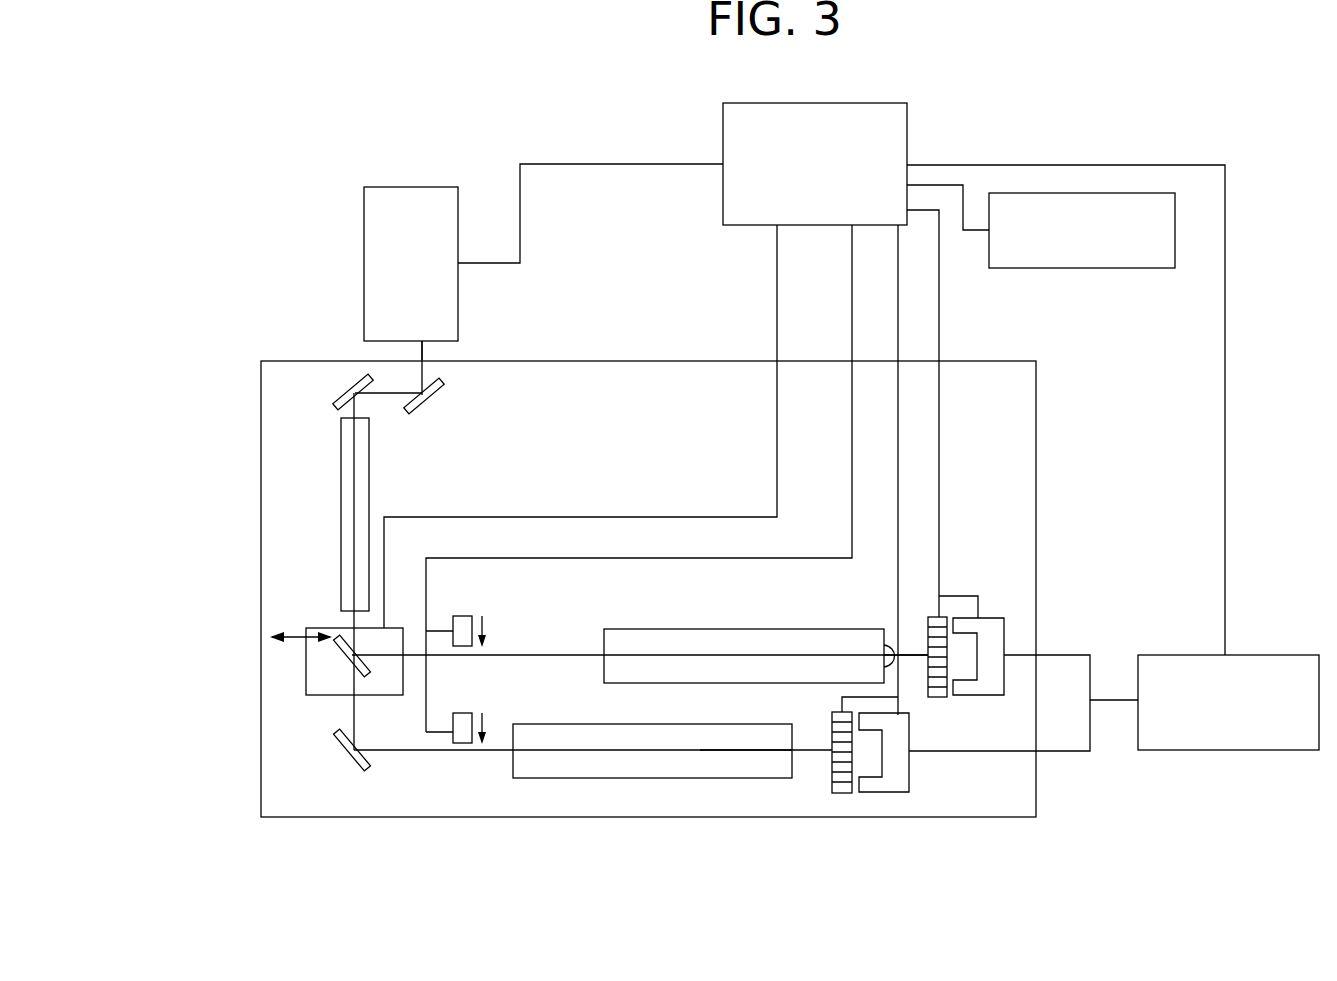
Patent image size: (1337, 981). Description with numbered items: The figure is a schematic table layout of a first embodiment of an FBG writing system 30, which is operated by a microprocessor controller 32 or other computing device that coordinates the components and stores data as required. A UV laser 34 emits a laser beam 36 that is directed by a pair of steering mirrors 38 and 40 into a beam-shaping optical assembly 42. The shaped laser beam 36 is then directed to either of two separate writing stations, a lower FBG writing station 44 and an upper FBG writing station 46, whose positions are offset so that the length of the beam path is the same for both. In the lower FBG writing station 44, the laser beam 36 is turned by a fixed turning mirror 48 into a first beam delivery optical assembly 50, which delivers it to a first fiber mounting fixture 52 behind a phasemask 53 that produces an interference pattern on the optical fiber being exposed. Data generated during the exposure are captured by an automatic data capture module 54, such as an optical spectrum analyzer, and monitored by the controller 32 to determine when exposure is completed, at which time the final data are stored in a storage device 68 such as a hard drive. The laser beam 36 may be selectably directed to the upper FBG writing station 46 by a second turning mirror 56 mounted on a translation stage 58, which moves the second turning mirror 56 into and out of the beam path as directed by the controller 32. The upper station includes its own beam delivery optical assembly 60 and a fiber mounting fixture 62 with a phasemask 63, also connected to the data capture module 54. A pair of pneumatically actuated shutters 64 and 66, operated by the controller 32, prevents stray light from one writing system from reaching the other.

The FBG writing system 30 is at (995, 132).
The controller 32 is at (830, 103).
The UV laser 34 is at (412, 187).
The laser beam 36 is at (423, 352).
The steering mirror 38 is at (443, 397).
The steering mirror 40 is at (340, 390).
The beam-shaping optical assembly 42 is at (370, 473).
The lower FBG writing station 44 is at (742, 796).
The upper FBG writing station 46 is at (863, 614).
The fixed turning mirror 48 is at (352, 768).
The first beam delivery optical assembly 50 is at (556, 778).
The first fiber mounting fixture 52 is at (888, 793).
The phasemask 53 is at (842, 793).
The data capture module 54 is at (1237, 750).
The second turning mirror 56 is at (340, 648).
The translation stage 58 is at (305, 657).
The beam delivery optical assembly 60 is at (730, 629).
The fiber mounting fixture 62 is at (990, 618).
The phasemask 63 is at (937, 698).
The pneumatically actuated shutter 64 is at (462, 713).
The pneumatically actuated shutter 66 is at (462, 616).
The storage device 68 is at (1135, 268).